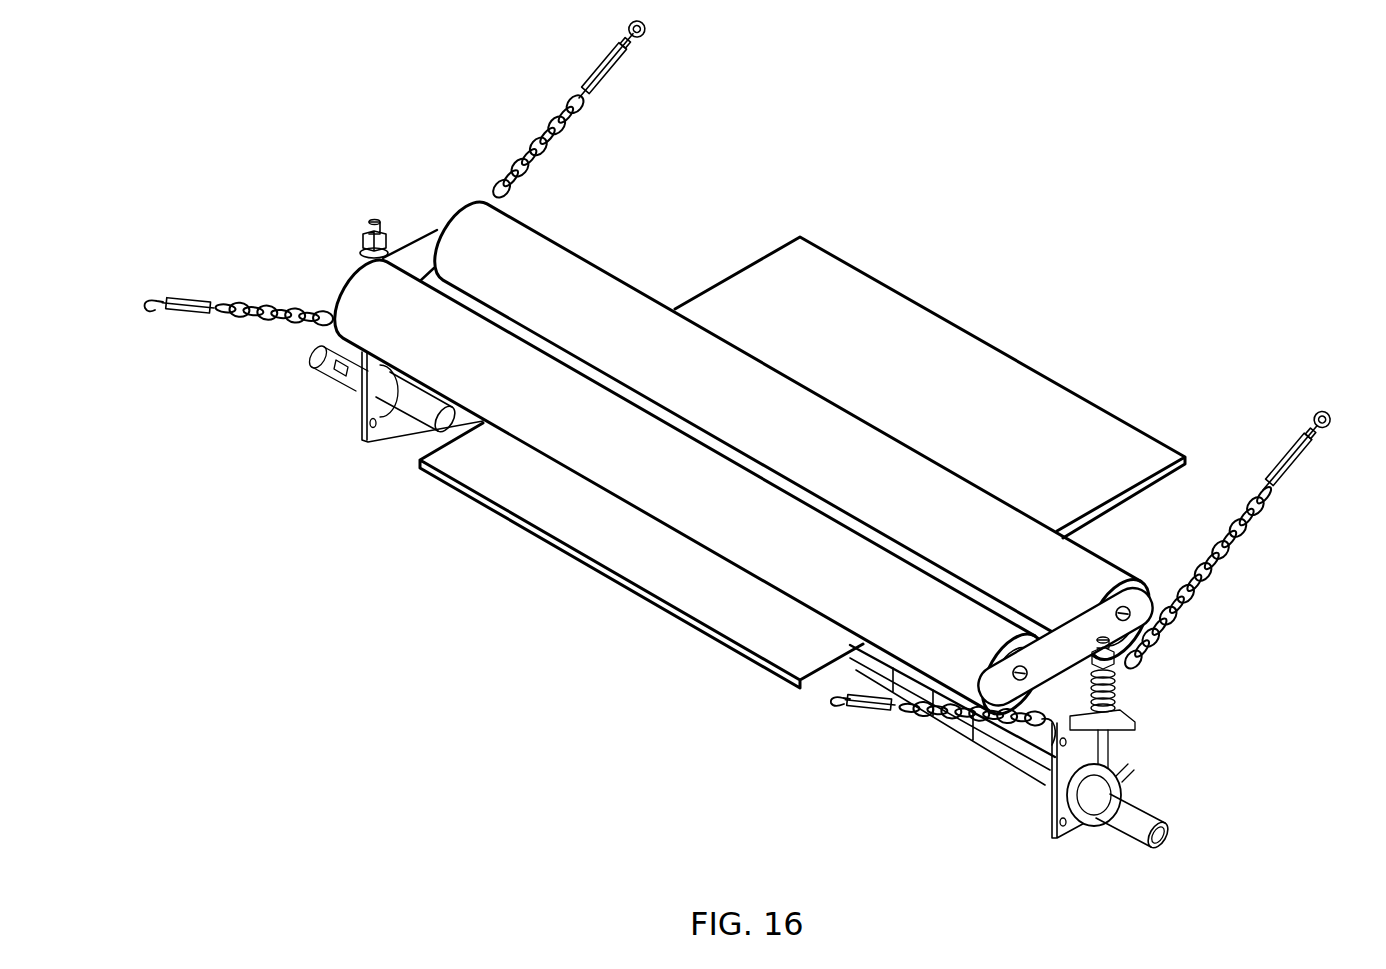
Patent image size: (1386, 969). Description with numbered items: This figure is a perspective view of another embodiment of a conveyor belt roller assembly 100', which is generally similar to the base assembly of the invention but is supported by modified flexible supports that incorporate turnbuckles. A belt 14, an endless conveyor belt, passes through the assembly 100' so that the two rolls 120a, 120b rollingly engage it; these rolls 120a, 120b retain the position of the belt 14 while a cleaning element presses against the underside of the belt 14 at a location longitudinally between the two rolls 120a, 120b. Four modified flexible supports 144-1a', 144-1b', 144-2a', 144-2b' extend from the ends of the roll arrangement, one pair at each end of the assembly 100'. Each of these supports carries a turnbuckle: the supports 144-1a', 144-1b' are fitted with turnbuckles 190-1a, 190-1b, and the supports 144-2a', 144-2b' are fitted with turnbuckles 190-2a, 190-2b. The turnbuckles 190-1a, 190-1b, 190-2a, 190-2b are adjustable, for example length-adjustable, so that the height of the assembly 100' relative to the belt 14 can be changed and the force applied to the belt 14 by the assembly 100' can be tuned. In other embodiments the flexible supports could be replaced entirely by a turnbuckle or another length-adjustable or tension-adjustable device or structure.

The belt 14 is at (910, 343).
The roll 120a is at (623, 473).
The roll 120b is at (552, 282).
The modified flexible support 144-1a' is at (217, 362).
The modified flexible support 144-1b' is at (617, 146).
The modified flexible support 144-2a' is at (948, 765).
The modified flexible support 144-2b' is at (1211, 586).
The turnbuckle 190-1a is at (183, 297).
The turnbuckle 190-1b is at (594, 64).
The turnbuckle 190-2a is at (867, 706).
The turnbuckle 190-2b is at (1280, 448).
The assembly 100' is at (839, 575).